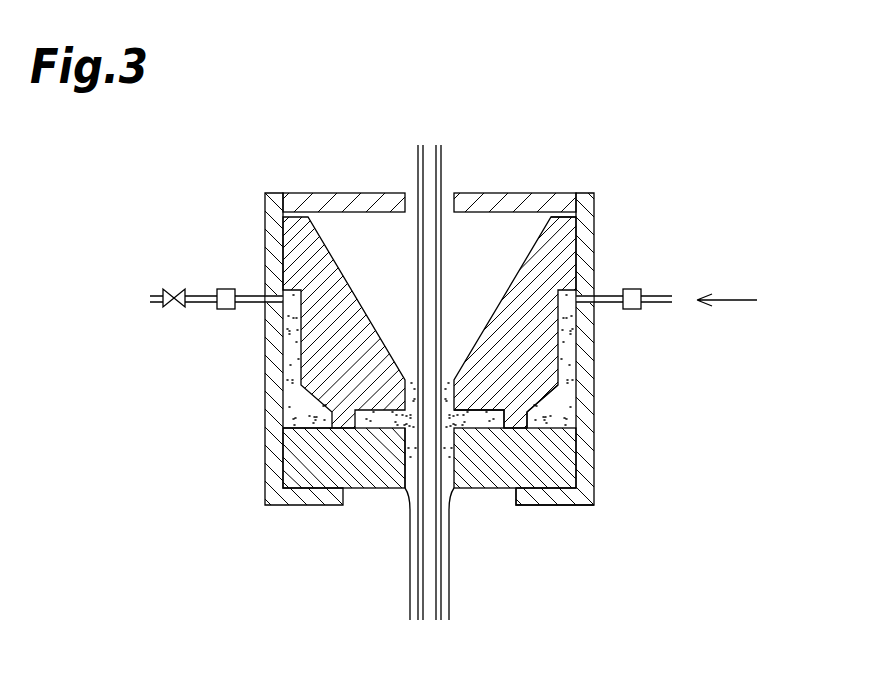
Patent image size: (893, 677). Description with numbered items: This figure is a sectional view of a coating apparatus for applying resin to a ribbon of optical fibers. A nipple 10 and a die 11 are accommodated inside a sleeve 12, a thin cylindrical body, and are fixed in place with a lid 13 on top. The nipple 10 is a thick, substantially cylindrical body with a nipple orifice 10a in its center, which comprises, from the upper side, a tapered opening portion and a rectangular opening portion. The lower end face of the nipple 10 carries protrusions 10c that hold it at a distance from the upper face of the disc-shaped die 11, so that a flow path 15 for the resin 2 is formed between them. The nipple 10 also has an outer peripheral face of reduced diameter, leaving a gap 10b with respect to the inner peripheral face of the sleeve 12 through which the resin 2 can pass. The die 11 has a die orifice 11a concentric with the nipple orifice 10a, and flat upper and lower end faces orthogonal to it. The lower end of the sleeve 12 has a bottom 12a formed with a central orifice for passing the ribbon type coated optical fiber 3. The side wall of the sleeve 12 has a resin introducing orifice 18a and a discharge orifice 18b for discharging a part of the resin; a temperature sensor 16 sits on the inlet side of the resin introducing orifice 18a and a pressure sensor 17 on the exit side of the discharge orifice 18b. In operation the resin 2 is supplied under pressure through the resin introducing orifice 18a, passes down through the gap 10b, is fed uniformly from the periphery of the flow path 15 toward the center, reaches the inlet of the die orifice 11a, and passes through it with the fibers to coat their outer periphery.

The resin 2 is at (665, 294).
The ribbon type coated optical fiber 3 is at (412, 596).
The nipple 10 is at (572, 230).
The nipple orifice 10a is at (513, 220).
The gap 10b is at (562, 392).
The protrusions 10c is at (523, 417).
The die 11 is at (477, 488).
The die orifice 11a is at (402, 477).
The sleeve 12 is at (268, 363).
The bottom 12a is at (557, 507).
The lid 13 is at (343, 193).
The flow path 15 is at (297, 430).
The temperature sensor 16 is at (635, 310).
The pressure sensor 17 is at (218, 288).
The resin introducing orifice 18a is at (583, 296).
The discharge orifice 18b is at (272, 293).